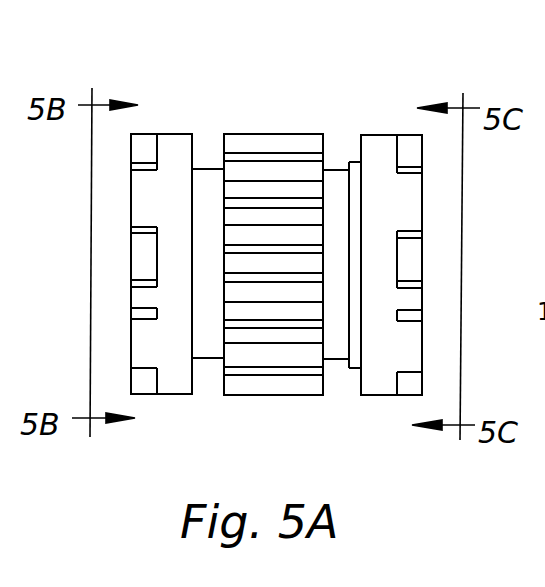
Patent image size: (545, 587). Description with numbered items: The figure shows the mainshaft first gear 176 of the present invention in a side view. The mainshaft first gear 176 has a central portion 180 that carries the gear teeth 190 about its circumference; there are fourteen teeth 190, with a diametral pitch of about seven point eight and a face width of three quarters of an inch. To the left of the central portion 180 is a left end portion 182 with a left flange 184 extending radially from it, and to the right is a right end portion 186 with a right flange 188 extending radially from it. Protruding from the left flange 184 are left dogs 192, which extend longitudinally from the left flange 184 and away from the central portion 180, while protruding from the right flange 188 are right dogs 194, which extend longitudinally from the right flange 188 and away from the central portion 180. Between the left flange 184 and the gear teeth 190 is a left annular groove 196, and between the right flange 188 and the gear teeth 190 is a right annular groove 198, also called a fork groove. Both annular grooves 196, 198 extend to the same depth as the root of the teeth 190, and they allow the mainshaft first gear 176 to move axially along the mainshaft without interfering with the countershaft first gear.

The mainshaft 1st gear 176 is at (306, 50).
The central portion 180 is at (262, 414).
The left end portion 182 is at (157, 415).
The left flange 184 is at (167, 134).
The right end portion 186 is at (385, 415).
The right flange 188 is at (403, 135).
The teeth 190 is at (305, 428).
The left dogs 192 is at (143, 267).
The right dogs 194 is at (407, 257).
The left annular groove 196 is at (200, 168).
The right annular groove 198 is at (345, 167).